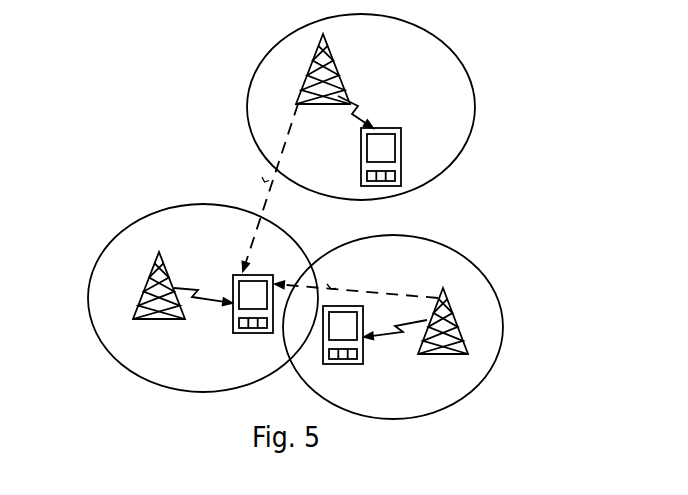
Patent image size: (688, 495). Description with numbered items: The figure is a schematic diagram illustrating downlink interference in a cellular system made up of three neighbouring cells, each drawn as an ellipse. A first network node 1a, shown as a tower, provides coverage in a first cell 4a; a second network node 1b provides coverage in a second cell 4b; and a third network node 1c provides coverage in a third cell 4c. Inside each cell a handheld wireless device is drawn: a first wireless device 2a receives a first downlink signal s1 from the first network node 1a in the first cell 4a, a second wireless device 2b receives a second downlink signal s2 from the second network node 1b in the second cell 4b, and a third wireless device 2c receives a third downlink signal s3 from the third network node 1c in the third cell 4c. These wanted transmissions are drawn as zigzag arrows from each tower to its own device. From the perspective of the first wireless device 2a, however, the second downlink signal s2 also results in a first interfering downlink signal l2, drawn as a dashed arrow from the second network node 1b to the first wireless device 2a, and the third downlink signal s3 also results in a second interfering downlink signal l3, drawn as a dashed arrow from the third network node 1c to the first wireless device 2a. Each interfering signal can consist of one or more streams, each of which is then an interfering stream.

The first network node 1a is at (147, 286).
The second network node 1b is at (309, 70).
The third network node 1c is at (462, 332).
The first wireless device 2a is at (260, 333).
The second wireless device 2b is at (402, 168).
The third wireless device 2c is at (335, 365).
The first cell 4a is at (150, 215).
The second cell 4b is at (472, 88).
The third cell 4c is at (470, 262).
The first downlink signal s1 is at (207, 300).
The second downlink signal s2 is at (367, 111).
The third downlink signal s3 is at (393, 333).
The first interfering downlink signal l2 is at (285, 141).
The second interfering downlink signal l3 is at (392, 290).